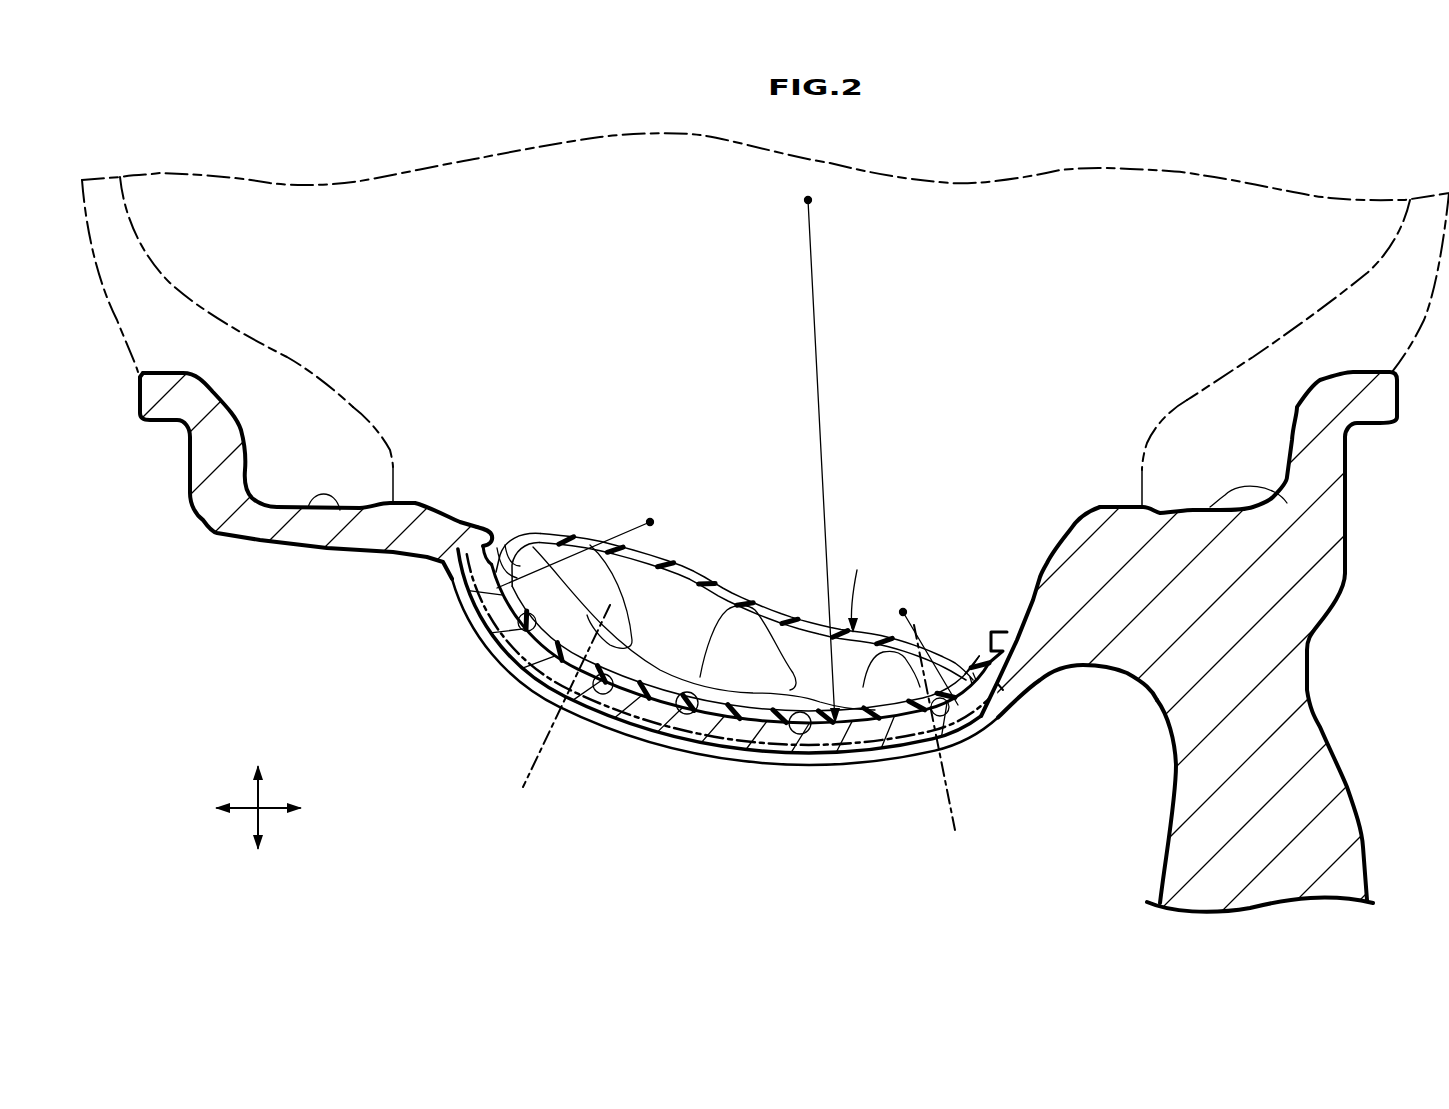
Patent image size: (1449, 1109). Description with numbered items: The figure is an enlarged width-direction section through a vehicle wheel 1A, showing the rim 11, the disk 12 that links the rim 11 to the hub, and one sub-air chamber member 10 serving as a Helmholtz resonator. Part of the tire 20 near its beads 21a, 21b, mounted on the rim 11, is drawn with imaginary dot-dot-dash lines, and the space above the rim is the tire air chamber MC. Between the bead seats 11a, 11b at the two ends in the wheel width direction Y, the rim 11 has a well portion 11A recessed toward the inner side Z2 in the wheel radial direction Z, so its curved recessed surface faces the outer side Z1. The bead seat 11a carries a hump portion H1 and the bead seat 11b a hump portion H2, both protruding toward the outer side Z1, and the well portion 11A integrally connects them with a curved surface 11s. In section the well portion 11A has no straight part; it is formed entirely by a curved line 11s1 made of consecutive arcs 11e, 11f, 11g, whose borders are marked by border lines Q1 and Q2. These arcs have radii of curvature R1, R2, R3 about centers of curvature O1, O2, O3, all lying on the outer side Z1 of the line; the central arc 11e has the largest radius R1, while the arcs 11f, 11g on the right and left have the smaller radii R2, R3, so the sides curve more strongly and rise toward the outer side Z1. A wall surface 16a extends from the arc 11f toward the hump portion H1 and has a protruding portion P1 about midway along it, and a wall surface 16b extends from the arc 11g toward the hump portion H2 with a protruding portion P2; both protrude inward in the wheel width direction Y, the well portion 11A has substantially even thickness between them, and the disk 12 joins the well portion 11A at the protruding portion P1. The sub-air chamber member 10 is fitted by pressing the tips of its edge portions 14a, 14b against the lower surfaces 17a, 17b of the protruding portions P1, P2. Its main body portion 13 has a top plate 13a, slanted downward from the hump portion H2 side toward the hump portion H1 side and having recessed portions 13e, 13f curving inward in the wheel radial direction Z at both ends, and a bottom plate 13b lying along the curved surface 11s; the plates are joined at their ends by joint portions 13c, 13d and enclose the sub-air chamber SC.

The vehicle wheel 1A is at (1378, 470).
The sub-air chamber member 10 is at (861, 590).
The rim 11 is at (187, 465).
The bead seat 11a is at (1287, 503).
The bead seat 11b is at (317, 510).
The arc 11e is at (797, 720).
The arc 11f is at (947, 737).
The arc 11g is at (497, 650).
The curved surface 11s is at (615, 712).
The curved line 11s1 is at (697, 732).
The well portion 11A is at (810, 591).
The disk 12 is at (1347, 817).
The main body portion 13 is at (731, 654).
The top plate 13a is at (703, 577).
The bottom plate 13b is at (750, 727).
The joint portion 13c is at (1007, 706).
The joint portion 13d is at (500, 605).
The recessed portion 13e is at (953, 680).
The recessed portion 13f is at (517, 540).
The edge portion 14a is at (1038, 682).
The edge portion 14b is at (483, 568).
The wall surface 16a is at (970, 677).
The wall surface 16b is at (520, 560).
The lower surface 17a is at (973, 673).
The lower surface 17b is at (510, 543).
The tire 20 is at (240, 323).
The bead 21a is at (1193, 417).
The bead 21b is at (343, 407).
The center of curvature O1 is at (808, 200).
The center of curvature O2 is at (903, 612).
The center of curvature O3 is at (650, 522).
The radius of curvature R1 is at (820, 393).
The radius of curvature R2 is at (940, 650).
The radius of curvature R3 is at (627, 537).
The protruding portion P1 is at (1000, 632).
The protruding portion P2 is at (488, 527).
The border line Q1 is at (927, 833).
The border line Q2 is at (547, 793).
The hump portion H1 is at (1127, 513).
The hump portion H2 is at (417, 507).
The tire air chamber MC is at (703, 297).
The sub-air chamber SC is at (763, 671).
The wheel radial direction Z is at (257, 797).
The outer side in the wheel radial direction Z1 is at (257, 752).
The inner side in the wheel radial direction Z2 is at (257, 869).
The wheel width direction Y is at (311, 809).